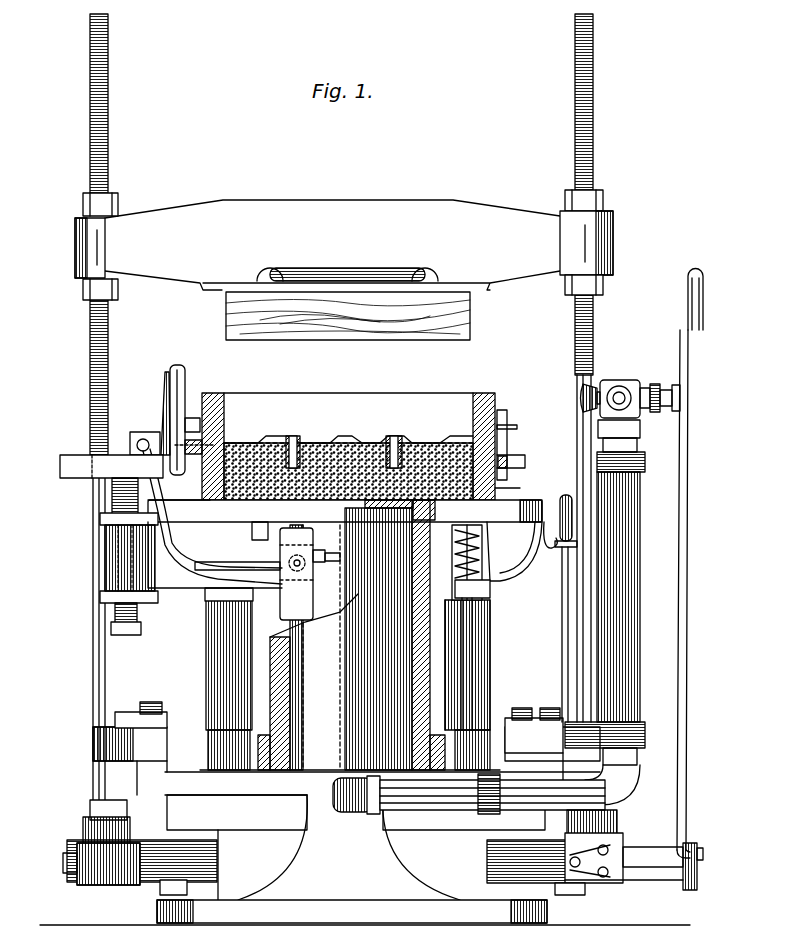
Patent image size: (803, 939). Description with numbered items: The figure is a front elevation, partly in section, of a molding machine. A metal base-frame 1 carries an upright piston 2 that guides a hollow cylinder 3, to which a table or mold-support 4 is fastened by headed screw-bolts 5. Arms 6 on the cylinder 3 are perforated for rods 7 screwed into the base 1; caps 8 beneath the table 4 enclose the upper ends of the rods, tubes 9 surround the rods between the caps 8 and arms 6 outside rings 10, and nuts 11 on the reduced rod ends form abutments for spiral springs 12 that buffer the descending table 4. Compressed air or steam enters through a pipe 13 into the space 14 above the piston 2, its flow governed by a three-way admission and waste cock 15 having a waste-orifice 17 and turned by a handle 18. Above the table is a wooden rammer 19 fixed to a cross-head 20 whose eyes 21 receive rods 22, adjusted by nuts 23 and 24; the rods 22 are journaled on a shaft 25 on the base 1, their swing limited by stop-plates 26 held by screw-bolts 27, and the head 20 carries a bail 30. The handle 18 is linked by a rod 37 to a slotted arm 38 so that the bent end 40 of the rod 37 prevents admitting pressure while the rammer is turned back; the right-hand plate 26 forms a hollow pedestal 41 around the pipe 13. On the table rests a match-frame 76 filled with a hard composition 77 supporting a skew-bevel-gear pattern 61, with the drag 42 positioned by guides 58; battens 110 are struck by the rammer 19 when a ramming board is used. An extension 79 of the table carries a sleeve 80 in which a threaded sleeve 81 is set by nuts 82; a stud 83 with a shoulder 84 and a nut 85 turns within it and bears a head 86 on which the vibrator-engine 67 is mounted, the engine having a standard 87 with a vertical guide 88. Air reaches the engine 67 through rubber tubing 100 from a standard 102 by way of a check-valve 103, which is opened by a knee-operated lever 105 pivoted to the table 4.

The base-frame 1 is at (365, 839).
The upright piston 2 is at (350, 635).
The hollow cylinder 3 is at (280, 680).
The table 4 is at (345, 520).
The headed screw-bolts 5 is at (437, 512).
The laterally-extending arms 6 is at (208, 745).
The rods 7 is at (470, 640).
The caps 8 is at (205, 595).
The tubes 9 is at (220, 653).
The rings 10 is at (494, 678).
The nuts 11 is at (487, 602).
The spiral springs 12 is at (487, 540).
The pipe 13 is at (390, 798).
The space 14 is at (310, 522).
The admission and waste cock 15 is at (650, 385).
The waste-orifice 17 is at (619, 386).
The handle 18 is at (705, 303).
The rammer 19 is at (472, 314).
The cross-head 20 is at (345, 210).
The perforated eyes 21 is at (75, 250).
The rods 22 is at (88, 150).
The nuts 23 is at (83, 206).
The nuts 24 is at (83, 292).
The shaft 25 is at (150, 875).
The stop-plates 26 is at (128, 710).
The screw-bolts 27 is at (160, 704).
The bail 30 is at (343, 268).
The rod 37 is at (688, 596).
The slotted arm 38 is at (698, 878).
The bent end 40 is at (685, 845).
The hollow pedestal 41 is at (636, 512).
The drag 42 is at (484, 392).
The guides 58 is at (522, 455).
The skew-bevel-gear pattern 61 is at (383, 437).
The vibrator-engine 67 is at (143, 438).
The match-frame 76 is at (497, 489).
The hard composition 77 is at (255, 445).
The extension 79 is at (175, 578).
The vertical sleeve 80 is at (110, 582).
The sleeve 81 is at (115, 628).
The nuts 82 is at (100, 524).
The stud 83 is at (110, 553).
The shoulder 84 is at (112, 492).
The nut 85 is at (111, 632).
The head 86 is at (70, 465).
The vertical standard 87 is at (164, 390).
The vertical guide 88 is at (186, 381).
The rubber tubing 100 is at (160, 506).
The standard 102 is at (561, 620).
The check-valve 103 is at (293, 575).
The lever 105 is at (278, 552).
The battens 110 is at (548, 550).